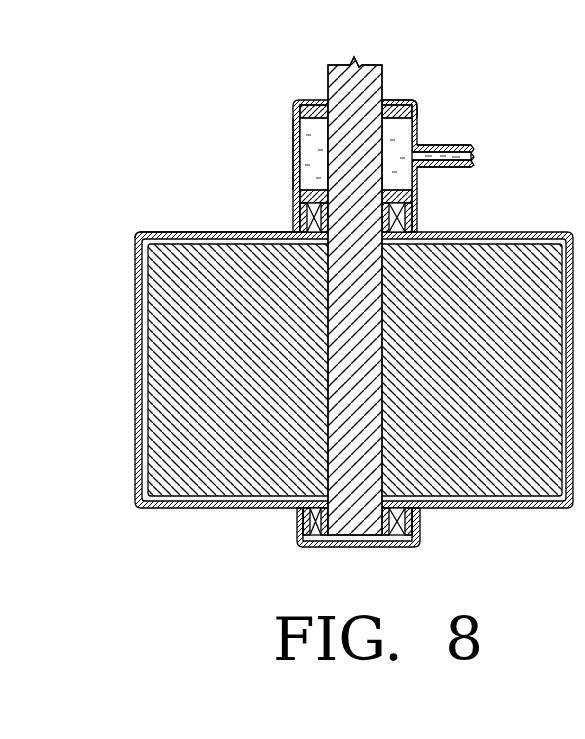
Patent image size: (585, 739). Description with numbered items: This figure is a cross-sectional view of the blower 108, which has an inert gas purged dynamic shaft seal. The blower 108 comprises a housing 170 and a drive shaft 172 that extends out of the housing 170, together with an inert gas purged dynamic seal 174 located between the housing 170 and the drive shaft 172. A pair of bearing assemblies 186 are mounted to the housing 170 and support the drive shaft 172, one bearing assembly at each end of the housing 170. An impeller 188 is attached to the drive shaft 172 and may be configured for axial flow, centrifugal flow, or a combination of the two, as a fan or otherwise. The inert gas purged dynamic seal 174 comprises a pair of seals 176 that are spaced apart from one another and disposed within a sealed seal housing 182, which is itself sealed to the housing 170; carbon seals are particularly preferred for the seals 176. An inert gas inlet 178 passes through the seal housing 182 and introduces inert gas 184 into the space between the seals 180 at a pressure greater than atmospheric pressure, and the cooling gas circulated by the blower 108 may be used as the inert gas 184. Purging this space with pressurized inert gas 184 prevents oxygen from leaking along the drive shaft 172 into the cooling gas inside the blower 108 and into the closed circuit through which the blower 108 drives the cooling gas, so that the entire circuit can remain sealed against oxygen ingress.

The blower 108 is at (133, 233).
The housing 170 is at (135, 333).
The drive shaft 172 is at (348, 85).
The inert gas purged dynamic seal 174 is at (421, 119).
The seals 176 is at (305, 112).
The inert gas inlet 178 is at (462, 144).
The space between the seals 180 is at (294, 138).
The seal housing 182 is at (398, 100).
The inert gas 184 is at (313, 170).
The bearing assemblies 186 is at (405, 217).
The impeller 188 is at (446, 381).